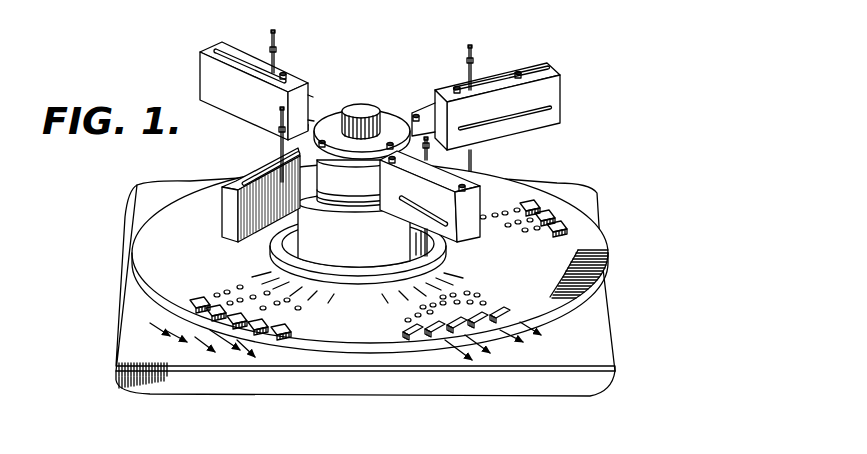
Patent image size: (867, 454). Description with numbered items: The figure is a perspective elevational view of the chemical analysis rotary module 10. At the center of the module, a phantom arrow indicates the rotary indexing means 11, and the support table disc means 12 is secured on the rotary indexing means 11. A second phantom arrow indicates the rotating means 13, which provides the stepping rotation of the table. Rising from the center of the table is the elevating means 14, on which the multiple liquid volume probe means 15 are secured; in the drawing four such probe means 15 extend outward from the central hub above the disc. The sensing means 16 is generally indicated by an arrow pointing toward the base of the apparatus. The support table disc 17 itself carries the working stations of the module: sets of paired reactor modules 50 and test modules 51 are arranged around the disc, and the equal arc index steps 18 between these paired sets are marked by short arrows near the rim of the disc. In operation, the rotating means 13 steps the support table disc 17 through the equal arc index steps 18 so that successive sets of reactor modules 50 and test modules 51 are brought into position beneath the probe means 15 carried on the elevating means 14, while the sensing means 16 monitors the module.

The chemical analysis rotary module 10 is at (391, 56).
The rotary indexing means 11 is at (386, 97).
The support table disc means 12 is at (513, 193).
The rotating means 13 is at (181, 237).
The elevating means 14 is at (362, 249).
The multiple liquid volume probe means 15 is at (206, 81).
The sensing means 16 is at (127, 257).
The support table disc 17 is at (528, 274).
The equal arc index steps 18 is at (182, 343).
The reactor modules 50 is at (198, 298).
The test modules 51 is at (212, 292).